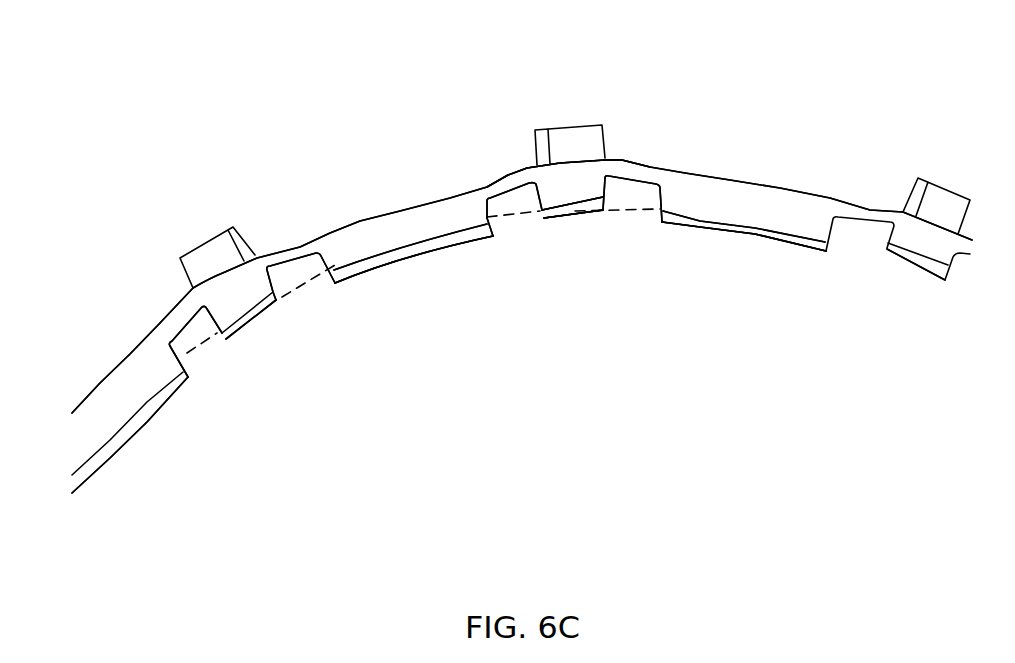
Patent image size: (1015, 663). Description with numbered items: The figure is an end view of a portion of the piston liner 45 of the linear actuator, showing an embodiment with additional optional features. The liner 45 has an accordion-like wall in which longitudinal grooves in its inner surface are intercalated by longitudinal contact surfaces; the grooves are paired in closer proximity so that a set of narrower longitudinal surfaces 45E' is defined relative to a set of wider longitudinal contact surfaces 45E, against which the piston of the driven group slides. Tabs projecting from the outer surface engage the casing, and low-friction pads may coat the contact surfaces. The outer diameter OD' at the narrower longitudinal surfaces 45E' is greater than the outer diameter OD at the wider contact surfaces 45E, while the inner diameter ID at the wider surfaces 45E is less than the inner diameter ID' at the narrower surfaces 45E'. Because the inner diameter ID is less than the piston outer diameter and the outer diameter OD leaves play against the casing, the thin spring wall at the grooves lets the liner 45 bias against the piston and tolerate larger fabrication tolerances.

The liner 45 is at (804, 290).
The longitudinal contact surfaces 45E is at (252, 324).
The narrower longitudinal surfaces 45E' is at (592, 271).
The outer diameter OD is at (522, 230).
The outer diameter at narrower surfaces OD' is at (568, 103).
The inner diameter ID is at (508, 351).
The inner diameter at narrower surfaces ID' is at (423, 234).